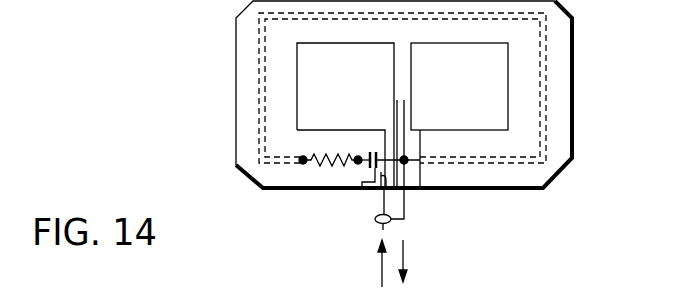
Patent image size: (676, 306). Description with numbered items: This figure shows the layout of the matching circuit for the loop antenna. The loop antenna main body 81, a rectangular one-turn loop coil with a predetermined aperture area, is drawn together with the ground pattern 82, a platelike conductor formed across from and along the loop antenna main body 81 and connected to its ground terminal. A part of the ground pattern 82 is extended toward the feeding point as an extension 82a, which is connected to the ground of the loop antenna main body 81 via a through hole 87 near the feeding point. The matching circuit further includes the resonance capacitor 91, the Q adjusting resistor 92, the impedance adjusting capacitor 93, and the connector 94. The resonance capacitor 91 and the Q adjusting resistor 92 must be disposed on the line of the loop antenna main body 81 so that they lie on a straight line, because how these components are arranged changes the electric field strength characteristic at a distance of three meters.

The loop antenna main body 81 is at (546, 90).
The ground pattern 82 is at (556, 60).
The extension 82a is at (404, 80).
The through hole 87 is at (406, 157).
The resonance capacitor 91 is at (372, 150).
The Q adjusting resistor 92 is at (312, 167).
The impedance adjusting capacitor 93 is at (366, 186).
The connector 94 is at (375, 222).